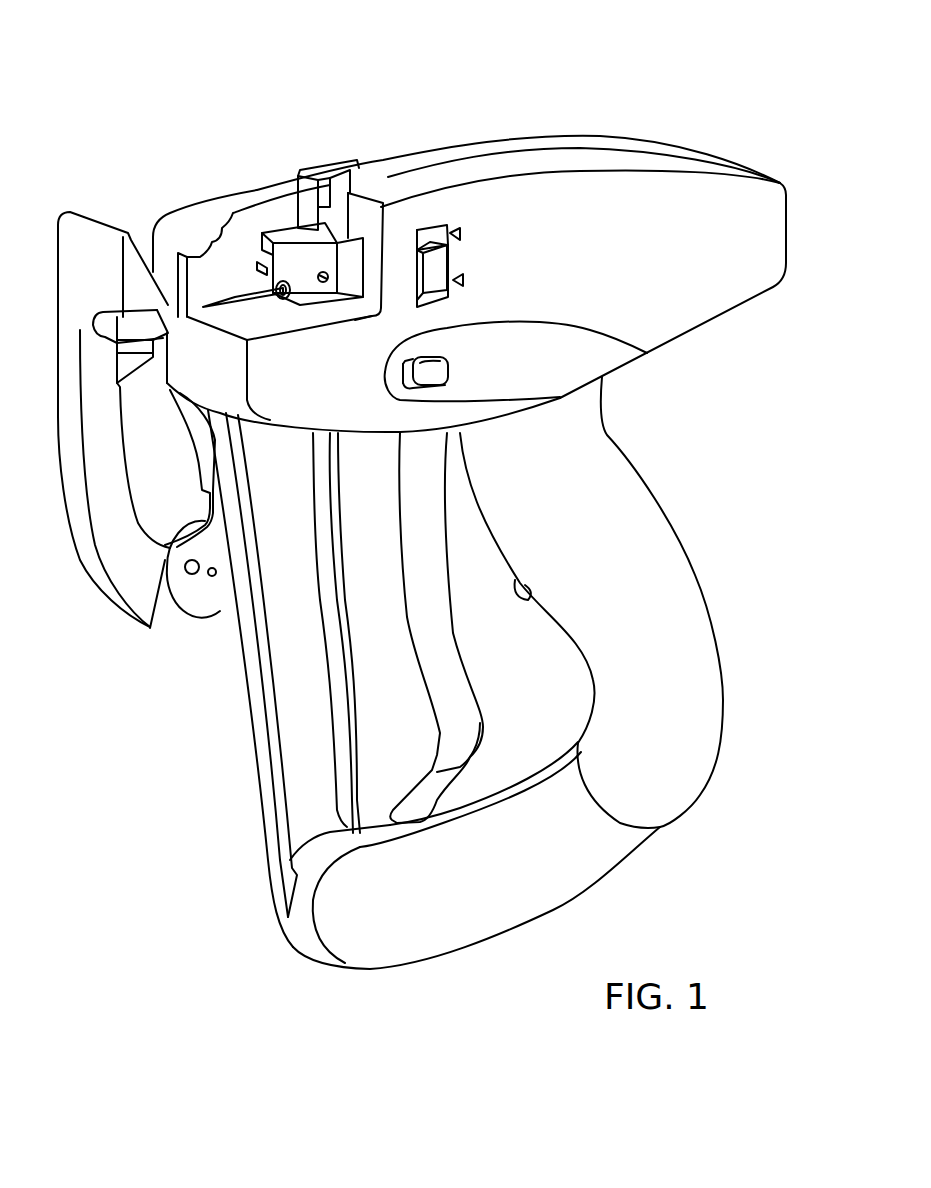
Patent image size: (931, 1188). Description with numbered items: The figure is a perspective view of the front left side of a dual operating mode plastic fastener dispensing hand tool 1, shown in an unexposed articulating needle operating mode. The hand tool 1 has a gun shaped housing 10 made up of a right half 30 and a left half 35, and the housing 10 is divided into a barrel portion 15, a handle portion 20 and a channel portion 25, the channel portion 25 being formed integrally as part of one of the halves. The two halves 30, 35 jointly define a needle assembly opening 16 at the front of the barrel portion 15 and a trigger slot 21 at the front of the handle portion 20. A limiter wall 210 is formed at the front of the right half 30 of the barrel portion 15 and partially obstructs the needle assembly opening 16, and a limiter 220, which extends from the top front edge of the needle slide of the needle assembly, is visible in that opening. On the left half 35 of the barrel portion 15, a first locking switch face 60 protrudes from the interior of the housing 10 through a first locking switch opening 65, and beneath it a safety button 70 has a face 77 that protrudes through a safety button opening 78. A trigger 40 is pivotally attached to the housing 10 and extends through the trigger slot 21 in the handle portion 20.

The dual operating mode plastic fastener dispensing hand tool 1 is at (731, 349).
The gun shaped housing 10 is at (763, 171).
The barrel portion 15 is at (544, 99).
The needle assembly opening 16 is at (353, 188).
The handle portion 20 is at (723, 552).
The trigger slot 21 is at (595, 685).
The channel portion 25 is at (230, 753).
The right half 30 is at (410, 153).
The left half 35 is at (577, 887).
The trigger 40 is at (413, 623).
The first locking switch face 60 is at (440, 283).
The first locking switch opening 65 is at (437, 237).
The safety button 70 is at (445, 350).
The safety button face 77 is at (440, 367).
The safety button opening 78 is at (403, 367).
The limiter wall 210 is at (165, 260).
The limiter 220 is at (278, 257).